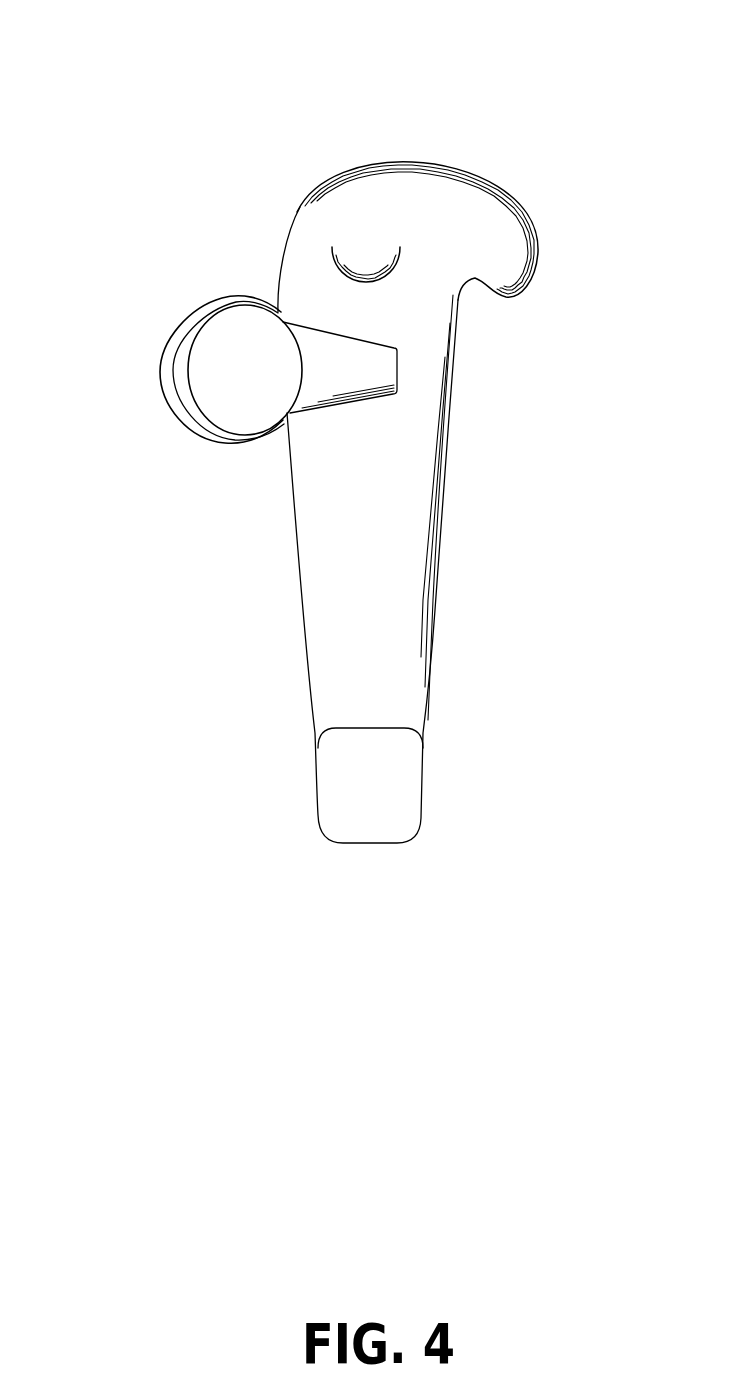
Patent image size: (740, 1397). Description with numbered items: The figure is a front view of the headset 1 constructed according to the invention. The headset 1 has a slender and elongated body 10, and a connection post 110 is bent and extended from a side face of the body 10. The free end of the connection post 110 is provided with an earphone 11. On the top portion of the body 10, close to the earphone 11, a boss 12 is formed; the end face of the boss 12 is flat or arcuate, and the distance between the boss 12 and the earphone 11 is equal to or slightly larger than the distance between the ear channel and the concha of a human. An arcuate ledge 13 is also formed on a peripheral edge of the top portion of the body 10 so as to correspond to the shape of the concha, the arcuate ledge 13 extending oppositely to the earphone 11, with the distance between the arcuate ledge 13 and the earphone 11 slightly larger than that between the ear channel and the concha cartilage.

The headset 1 is at (549, 158).
The body 10 is at (330, 623).
The connection post 110 is at (330, 338).
The earphone 11 is at (203, 353).
The boss 12 is at (340, 268).
The arcuate ledge 13 is at (505, 257).